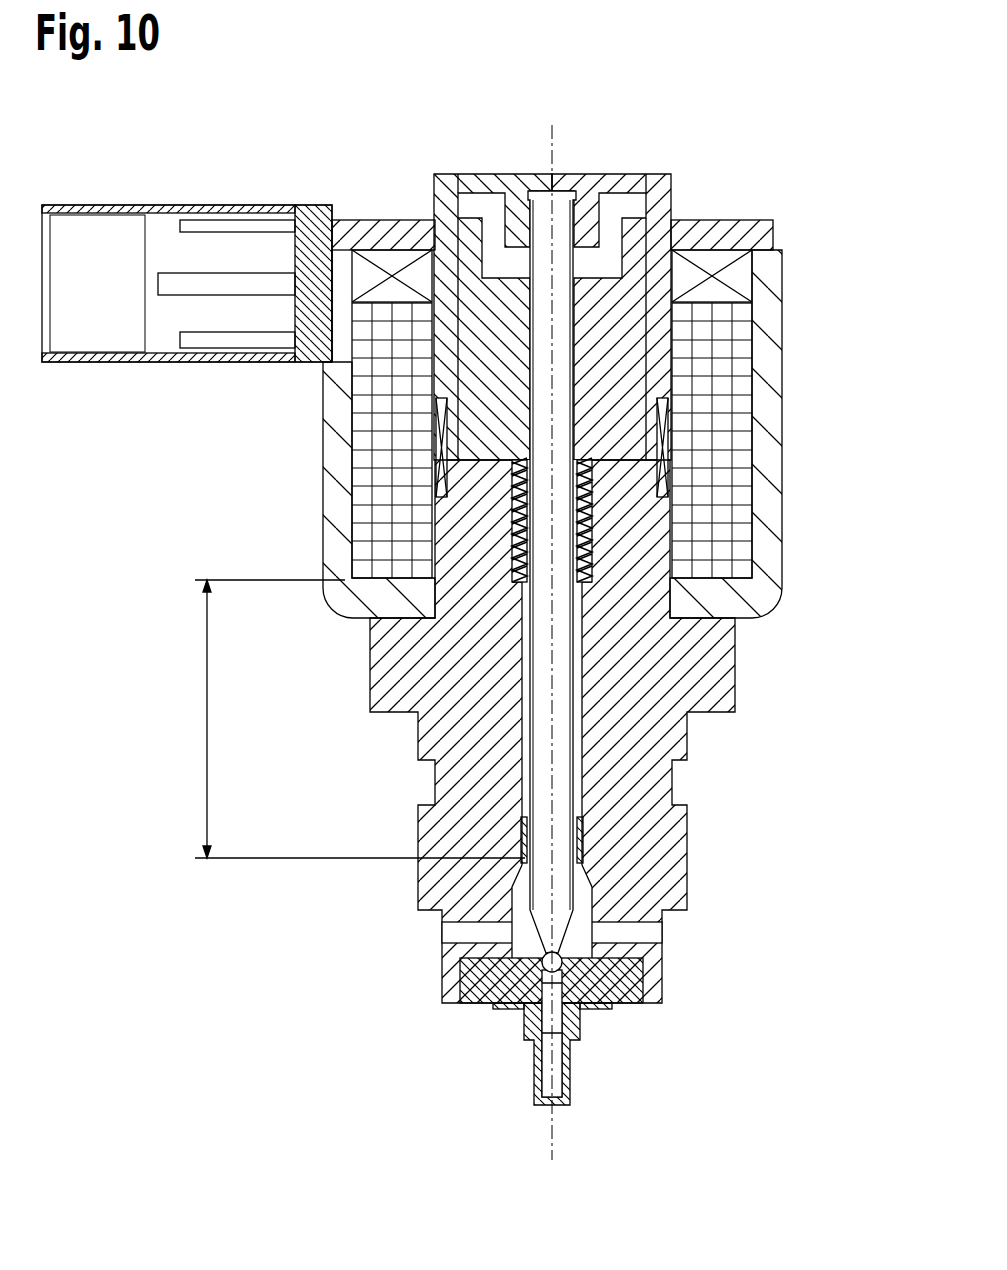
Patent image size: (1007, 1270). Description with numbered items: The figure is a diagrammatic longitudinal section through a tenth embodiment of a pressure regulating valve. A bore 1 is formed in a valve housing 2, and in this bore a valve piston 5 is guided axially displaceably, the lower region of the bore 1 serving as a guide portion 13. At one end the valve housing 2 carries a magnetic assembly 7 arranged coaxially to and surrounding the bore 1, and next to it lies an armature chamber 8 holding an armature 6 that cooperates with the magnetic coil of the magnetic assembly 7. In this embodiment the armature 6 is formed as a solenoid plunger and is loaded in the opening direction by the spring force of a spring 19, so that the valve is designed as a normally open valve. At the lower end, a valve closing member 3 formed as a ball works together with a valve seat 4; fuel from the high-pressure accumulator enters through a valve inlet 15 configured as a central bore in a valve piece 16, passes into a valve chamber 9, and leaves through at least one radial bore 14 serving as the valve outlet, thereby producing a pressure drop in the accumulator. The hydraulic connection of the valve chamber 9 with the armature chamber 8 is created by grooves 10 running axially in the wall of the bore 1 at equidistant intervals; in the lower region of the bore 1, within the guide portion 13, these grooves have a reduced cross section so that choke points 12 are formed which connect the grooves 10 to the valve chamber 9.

The bore 1 is at (527, 857).
The valve housing 2 is at (462, 795).
The valve closing member 3 is at (560, 972).
The valve seat 4 is at (470, 958).
The valve piston 5 is at (553, 572).
The armature 6 is at (605, 325).
The magnetic assembly 7 is at (795, 400).
The armature chamber 8 is at (480, 204).
The valve chamber 9 is at (595, 905).
The grooves 10 is at (520, 735).
The choke points 12 is at (583, 835).
The guide portion 13 is at (207, 722).
The radial bore 14 is at (652, 932).
The valve inlet 15 is at (557, 1018).
The valve piece 16 is at (650, 990).
The spring 19 is at (592, 543).